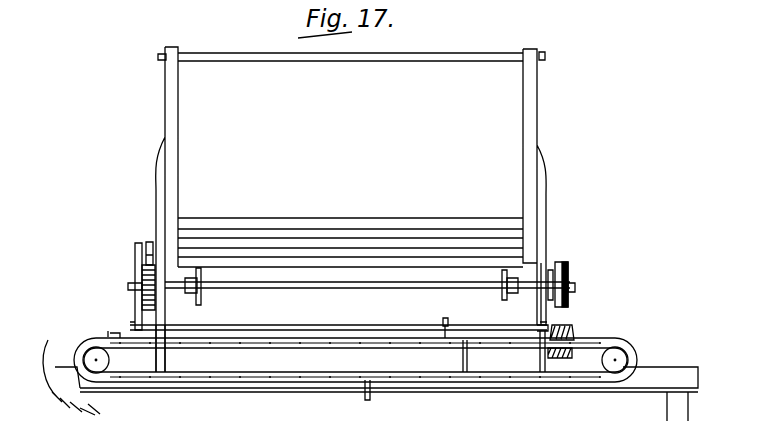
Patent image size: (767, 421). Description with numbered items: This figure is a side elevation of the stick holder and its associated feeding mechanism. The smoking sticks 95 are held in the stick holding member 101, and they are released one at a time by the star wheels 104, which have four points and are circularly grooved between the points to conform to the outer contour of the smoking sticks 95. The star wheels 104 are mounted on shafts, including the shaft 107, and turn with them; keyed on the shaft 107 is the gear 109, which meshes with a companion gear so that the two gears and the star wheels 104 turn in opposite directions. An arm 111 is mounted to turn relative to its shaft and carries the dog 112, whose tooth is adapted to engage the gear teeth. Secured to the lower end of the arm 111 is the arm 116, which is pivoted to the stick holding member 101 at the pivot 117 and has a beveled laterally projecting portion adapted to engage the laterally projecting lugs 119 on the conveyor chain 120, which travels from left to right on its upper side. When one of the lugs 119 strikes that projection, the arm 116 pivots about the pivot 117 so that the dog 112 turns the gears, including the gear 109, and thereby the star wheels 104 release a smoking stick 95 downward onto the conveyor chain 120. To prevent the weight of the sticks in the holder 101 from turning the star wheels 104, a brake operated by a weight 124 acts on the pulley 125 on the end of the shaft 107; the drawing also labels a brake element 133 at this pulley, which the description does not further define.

The stick holding member 101 is at (447, 54).
The pulley 125 is at (172, 138).
The smoking sticks 95 is at (473, 220).
The shaft 107 is at (366, 288).
The star wheels 104 is at (201, 296).
The arm 111 is at (135, 270).
The dog 112 is at (146, 247).
The gear 109 is at (128, 287).
The arm 116 is at (296, 326).
The pivot 117 is at (442, 322).
The lugs 119 is at (93, 322).
The conveyor chain 120 is at (86, 350).
The ratchet plate 133 is at (572, 308).
The weight 124 is at (573, 333).